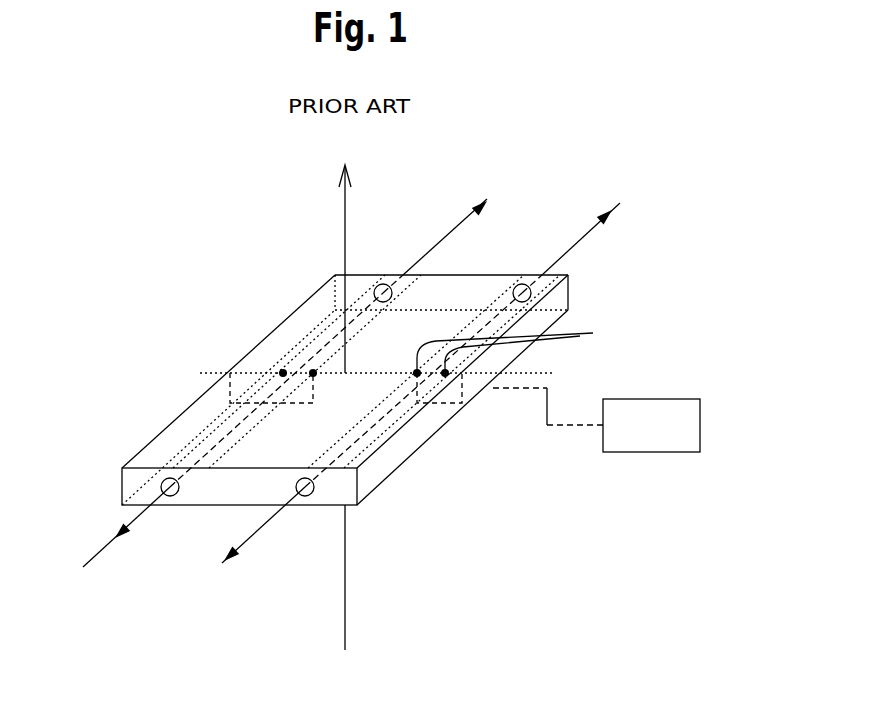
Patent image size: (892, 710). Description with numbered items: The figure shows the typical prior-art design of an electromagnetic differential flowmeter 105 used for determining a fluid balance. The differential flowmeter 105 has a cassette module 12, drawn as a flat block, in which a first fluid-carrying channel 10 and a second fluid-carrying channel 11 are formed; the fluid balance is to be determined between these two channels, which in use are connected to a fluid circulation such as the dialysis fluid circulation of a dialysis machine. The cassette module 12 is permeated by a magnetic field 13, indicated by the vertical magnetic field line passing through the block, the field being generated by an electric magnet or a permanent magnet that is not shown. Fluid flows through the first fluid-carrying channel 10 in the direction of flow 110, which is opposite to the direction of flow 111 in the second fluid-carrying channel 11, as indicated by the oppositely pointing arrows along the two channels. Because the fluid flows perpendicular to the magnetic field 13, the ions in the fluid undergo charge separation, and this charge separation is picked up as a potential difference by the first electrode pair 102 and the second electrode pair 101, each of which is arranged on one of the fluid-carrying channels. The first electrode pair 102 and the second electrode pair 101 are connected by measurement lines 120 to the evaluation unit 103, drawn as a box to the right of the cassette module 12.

The electromagnetic differential flowmeter 105 is at (188, 300).
The first fluid-carrying channel 10 is at (177, 457).
The second fluid-carrying channel 11 is at (331, 478).
The cassette module 12 is at (412, 455).
The magnetic field 13 is at (343, 237).
The direction of flow 110 is at (432, 248).
The direction of flow 111 is at (566, 248).
The second electrode pair 101 is at (593, 333).
The first electrode pair 102 is at (313, 370).
The measurement lines 120 is at (548, 427).
The evaluation unit 103 is at (667, 452).